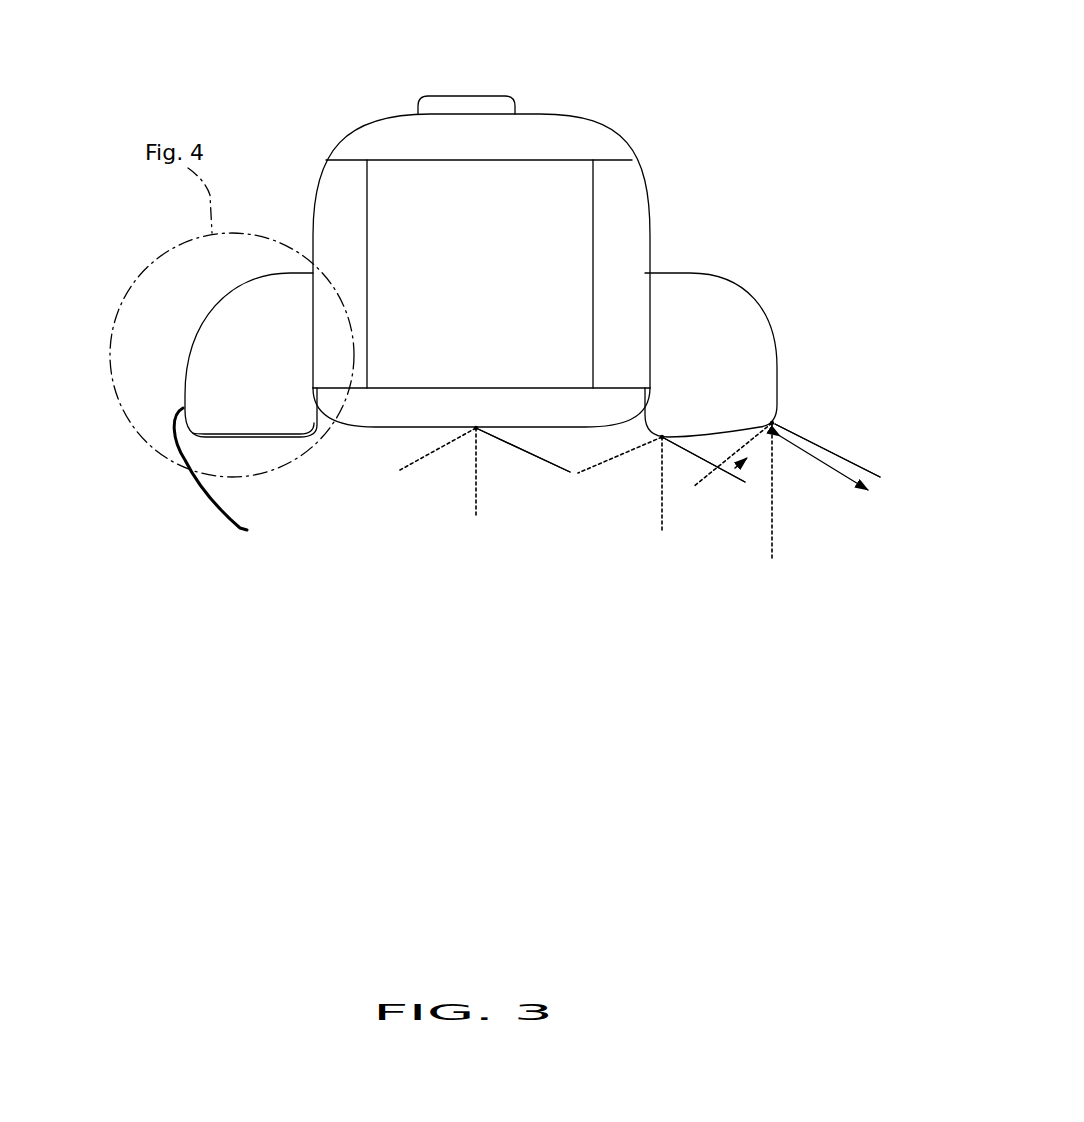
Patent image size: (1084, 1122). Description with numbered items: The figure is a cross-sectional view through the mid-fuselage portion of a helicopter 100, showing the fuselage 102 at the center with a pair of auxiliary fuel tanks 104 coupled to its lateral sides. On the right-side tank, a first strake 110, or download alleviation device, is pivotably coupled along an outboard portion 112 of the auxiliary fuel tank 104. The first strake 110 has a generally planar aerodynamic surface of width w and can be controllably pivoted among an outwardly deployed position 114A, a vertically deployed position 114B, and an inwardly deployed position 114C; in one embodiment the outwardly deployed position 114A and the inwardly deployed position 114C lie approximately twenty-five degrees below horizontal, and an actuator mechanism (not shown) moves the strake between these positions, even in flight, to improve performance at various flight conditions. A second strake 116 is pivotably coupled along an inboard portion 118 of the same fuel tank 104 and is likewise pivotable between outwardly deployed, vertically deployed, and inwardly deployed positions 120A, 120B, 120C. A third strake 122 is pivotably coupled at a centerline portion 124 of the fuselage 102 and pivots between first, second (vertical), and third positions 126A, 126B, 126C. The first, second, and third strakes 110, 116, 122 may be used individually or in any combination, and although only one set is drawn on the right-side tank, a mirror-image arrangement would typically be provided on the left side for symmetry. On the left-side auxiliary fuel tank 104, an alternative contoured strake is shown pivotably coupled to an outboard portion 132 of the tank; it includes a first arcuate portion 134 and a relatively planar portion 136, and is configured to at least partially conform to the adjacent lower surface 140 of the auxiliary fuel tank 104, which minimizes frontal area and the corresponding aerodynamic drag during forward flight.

The helicopter 100 is at (776, 88).
The fuselage 102 is at (357, 120).
The auxiliary fuel tank 104 is at (232, 290).
The first strake 110 is at (820, 446).
The outboard portion 112 is at (781, 417).
The outwardly deployed position 114A is at (862, 457).
The vertically deployed position 114B is at (781, 512).
The inwardly deployed position 114C is at (745, 483).
The second strake 116 is at (688, 448).
The inboard portion 118 is at (663, 433).
The outwardly deployed position 120A is at (727, 480).
The vertically deployed position 120B is at (656, 500).
The inwardly deployed position 120C is at (628, 462).
The third strake 122 is at (520, 447).
The centerline portion 124 is at (476, 425).
The first position 126A is at (528, 462).
The second position 126B is at (468, 508).
The third position 126C is at (412, 472).
The outboard portion 132 is at (162, 400).
The first arcuate portion 134 is at (155, 418).
The relatively planar portion 136 is at (178, 477).
The lower surface 140 is at (242, 442).